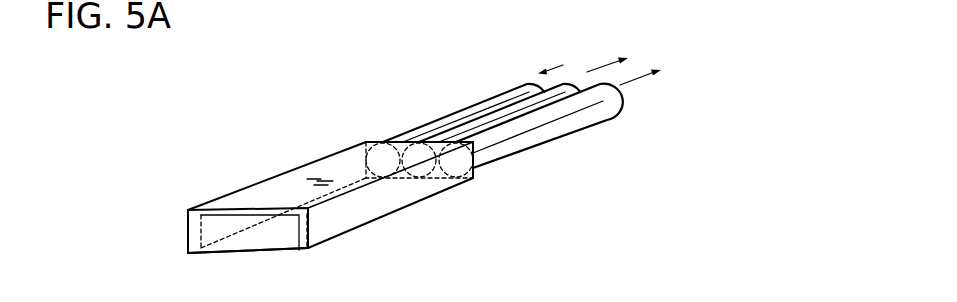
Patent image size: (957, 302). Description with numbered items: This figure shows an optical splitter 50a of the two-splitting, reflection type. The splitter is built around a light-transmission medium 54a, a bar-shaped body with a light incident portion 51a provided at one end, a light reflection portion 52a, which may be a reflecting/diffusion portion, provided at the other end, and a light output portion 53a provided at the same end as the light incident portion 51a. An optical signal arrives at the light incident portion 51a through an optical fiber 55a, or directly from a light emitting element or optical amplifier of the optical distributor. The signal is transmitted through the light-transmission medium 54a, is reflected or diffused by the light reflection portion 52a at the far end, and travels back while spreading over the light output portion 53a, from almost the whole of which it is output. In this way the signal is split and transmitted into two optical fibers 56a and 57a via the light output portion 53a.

The optical splitter 50a is at (307, 53).
The light incident portion 51a is at (369, 140).
The light reflection portion 52a is at (309, 249).
The light output portion 53a is at (473, 180).
The light-transmission medium 54a is at (262, 183).
The optical fiber 55a is at (446, 117).
The optical fiber 56a is at (503, 95).
The optical fiber 57a is at (543, 130).